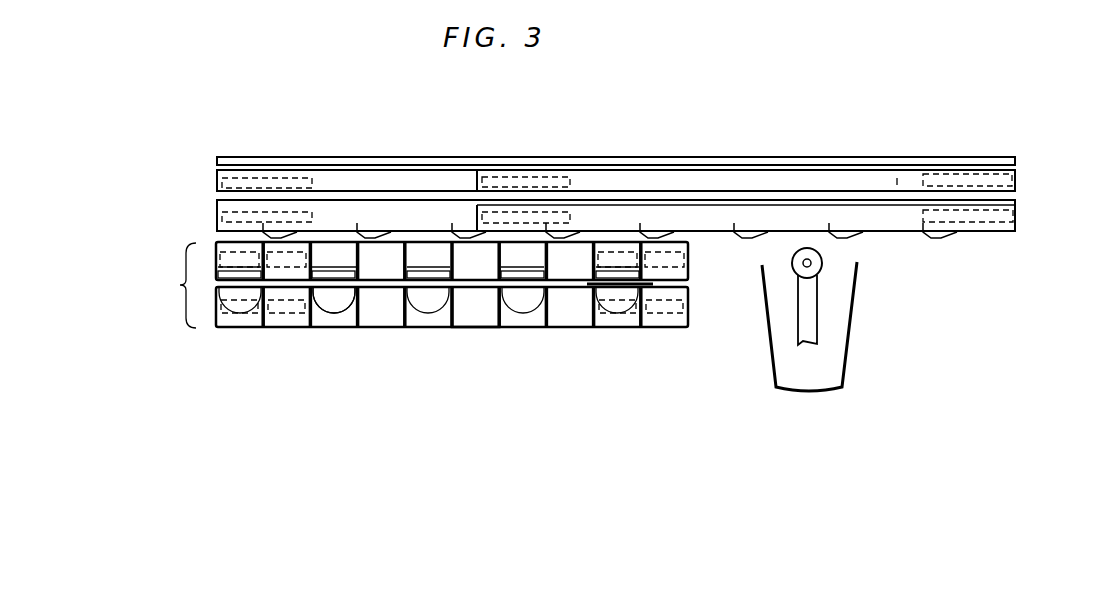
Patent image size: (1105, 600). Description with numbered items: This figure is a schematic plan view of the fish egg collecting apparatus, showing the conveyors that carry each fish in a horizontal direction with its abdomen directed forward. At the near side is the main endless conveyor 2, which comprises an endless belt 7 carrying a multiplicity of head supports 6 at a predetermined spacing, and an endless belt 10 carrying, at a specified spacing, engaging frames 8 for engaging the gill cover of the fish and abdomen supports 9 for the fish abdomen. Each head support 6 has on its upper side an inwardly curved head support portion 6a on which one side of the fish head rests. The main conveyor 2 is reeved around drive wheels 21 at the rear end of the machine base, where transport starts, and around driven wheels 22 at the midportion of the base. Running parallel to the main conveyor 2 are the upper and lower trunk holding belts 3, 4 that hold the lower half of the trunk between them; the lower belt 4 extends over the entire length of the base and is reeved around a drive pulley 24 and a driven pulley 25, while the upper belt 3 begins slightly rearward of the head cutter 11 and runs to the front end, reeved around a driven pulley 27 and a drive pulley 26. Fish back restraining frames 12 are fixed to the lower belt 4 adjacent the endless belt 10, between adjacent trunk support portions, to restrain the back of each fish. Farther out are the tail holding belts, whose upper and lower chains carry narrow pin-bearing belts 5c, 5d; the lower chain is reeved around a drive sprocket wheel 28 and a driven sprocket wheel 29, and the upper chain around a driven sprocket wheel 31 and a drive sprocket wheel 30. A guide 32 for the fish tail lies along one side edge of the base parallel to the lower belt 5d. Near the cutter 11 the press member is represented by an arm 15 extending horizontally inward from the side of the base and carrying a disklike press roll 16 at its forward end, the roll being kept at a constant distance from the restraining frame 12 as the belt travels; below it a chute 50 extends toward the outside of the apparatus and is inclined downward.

The main endless conveyor 2 is at (441, 309).
The upper trunk holding endless conveyor belt 3 is at (977, 229).
The lower trunk holding endless conveyor belt 4 is at (340, 198).
The upper tail holding belt 5c is at (790, 181).
The lower tail holding belt 5d is at (392, 181).
The head support 6 is at (340, 310).
The head support portion 6a is at (325, 305).
The endless belt 7 is at (476, 327).
The engaging frame 8 is at (522, 286).
The abdomen support 9 is at (538, 250).
The endless belt 10 is at (380, 283).
The head cutter 11 is at (605, 285).
The fish back restraining frame 12 is at (850, 234).
The arm 15 is at (812, 333).
The press roll 16 is at (822, 270).
The drive wheel 21 is at (672, 315).
The driven wheel 22 is at (258, 314).
The drive pulley 24 is at (1072, 245).
The driven pulley 25 is at (222, 213).
The drive pulley 26 is at (1002, 241).
The driven pulley 27 is at (570, 215).
The drive sprocket wheel 28 is at (1020, 173).
The driven sprocket wheel 29 is at (222, 181).
The drive sprocket wheel 30 is at (1002, 152).
The driven sprocket wheel 31 is at (490, 178).
The guide 32 is at (658, 165).
The chute 50 is at (812, 386).